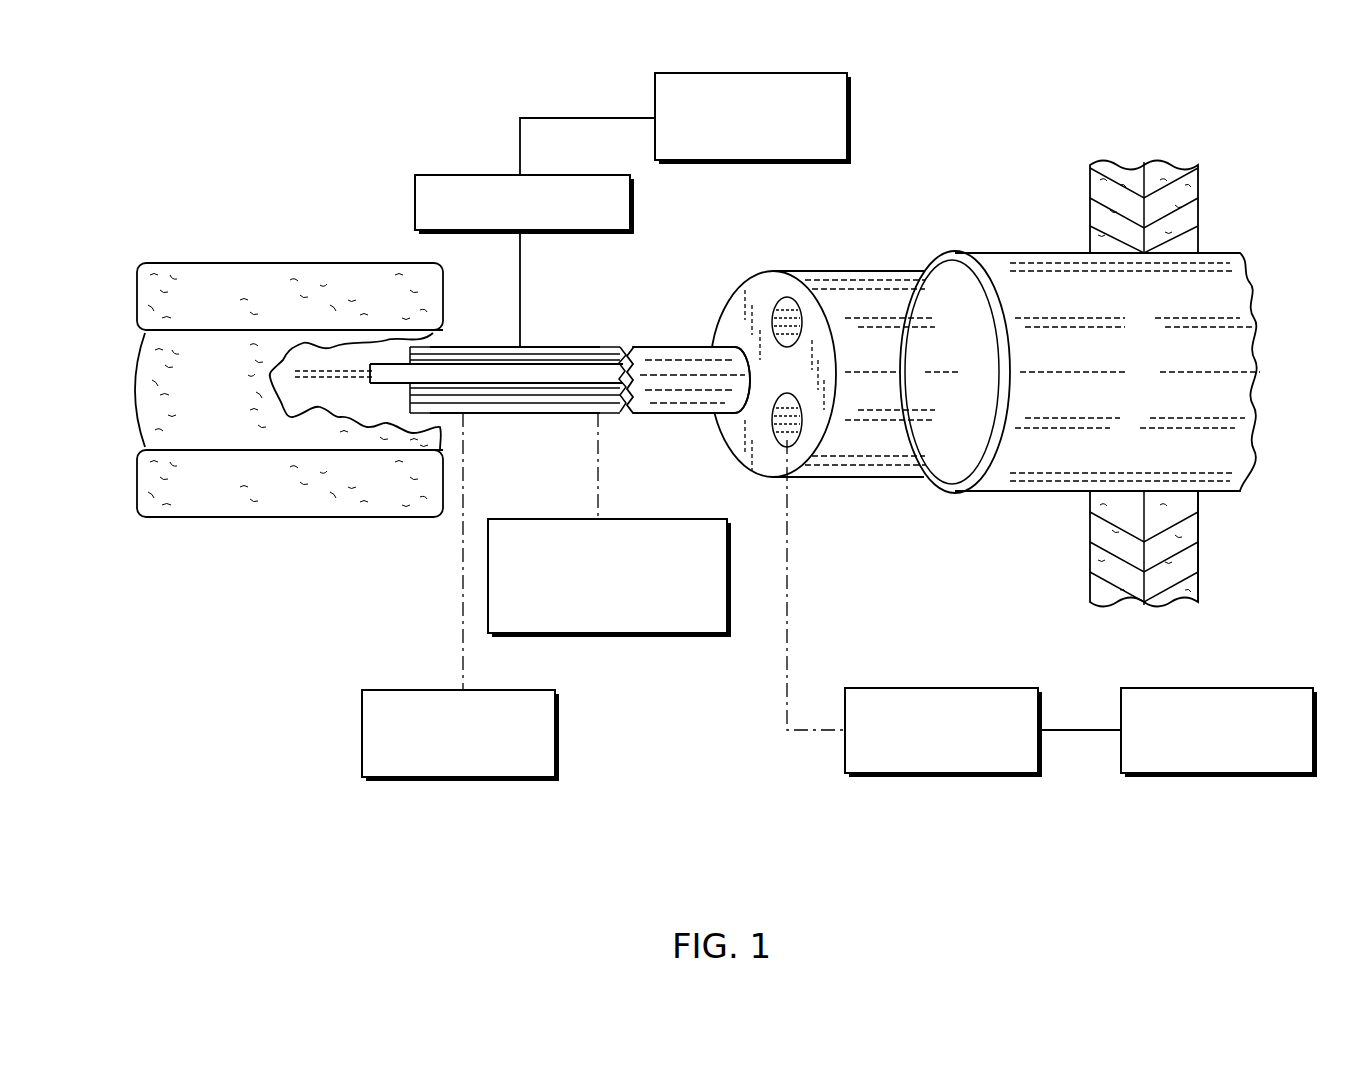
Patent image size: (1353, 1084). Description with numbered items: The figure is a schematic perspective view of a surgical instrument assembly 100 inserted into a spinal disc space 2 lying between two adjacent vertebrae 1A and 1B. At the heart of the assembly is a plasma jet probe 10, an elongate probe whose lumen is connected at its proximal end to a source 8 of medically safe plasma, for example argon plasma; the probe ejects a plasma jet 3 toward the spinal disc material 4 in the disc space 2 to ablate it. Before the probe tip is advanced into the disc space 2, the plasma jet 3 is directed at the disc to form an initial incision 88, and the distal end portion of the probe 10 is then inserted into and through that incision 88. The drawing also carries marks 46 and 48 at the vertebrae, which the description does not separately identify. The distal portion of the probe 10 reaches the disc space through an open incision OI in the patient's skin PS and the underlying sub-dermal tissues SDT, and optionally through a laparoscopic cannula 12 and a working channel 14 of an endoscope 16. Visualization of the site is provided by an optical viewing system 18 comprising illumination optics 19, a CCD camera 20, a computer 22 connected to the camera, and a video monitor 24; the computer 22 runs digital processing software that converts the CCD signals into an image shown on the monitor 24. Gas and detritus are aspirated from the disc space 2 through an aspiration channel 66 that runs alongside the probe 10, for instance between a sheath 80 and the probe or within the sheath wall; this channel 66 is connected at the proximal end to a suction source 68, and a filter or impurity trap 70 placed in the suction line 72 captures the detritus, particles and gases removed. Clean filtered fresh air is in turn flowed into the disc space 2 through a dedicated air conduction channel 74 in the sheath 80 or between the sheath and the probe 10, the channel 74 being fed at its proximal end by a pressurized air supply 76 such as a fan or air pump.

The vertebra 1A is at (207, 270).
The vertebra 1B is at (207, 512).
The spinal disc space 2 is at (121, 394).
The plasma jet 3 is at (347, 368).
The spinal disc material 4 is at (307, 406).
The source of plasma 8 is at (397, 690).
The plasma jet probe 10 is at (501, 379).
The laparoscopic cannula 12 is at (1000, 493).
The working channel 14 is at (742, 390).
The endoscope 16 is at (854, 271).
The optical viewing system 18 is at (829, 665).
The illumination optics 19 is at (781, 318).
The CCD camera 20 is at (782, 442).
The computer 22 is at (894, 688).
The video monitor 24 is at (1174, 688).
The upper vertebral endplate 46 is at (210, 336).
The lower vertebral endplate 48 is at (207, 447).
The aspiration channel 66 is at (597, 345).
The suction source 68 is at (705, 73).
The filter or impurity trap 70 is at (459, 175).
The suction line 72 is at (518, 135).
The air conduction channel 74 is at (613, 399).
The pressurized air supply 76 is at (535, 519).
The sheath 80 is at (664, 335).
The initial incision 88 is at (437, 346).
The surgical instrument assembly 100 is at (334, 606).
The open incision OI is at (1198, 253).
The sub-dermal tissues SDT is at (1097, 560).
The patient's skin PS is at (1198, 560).